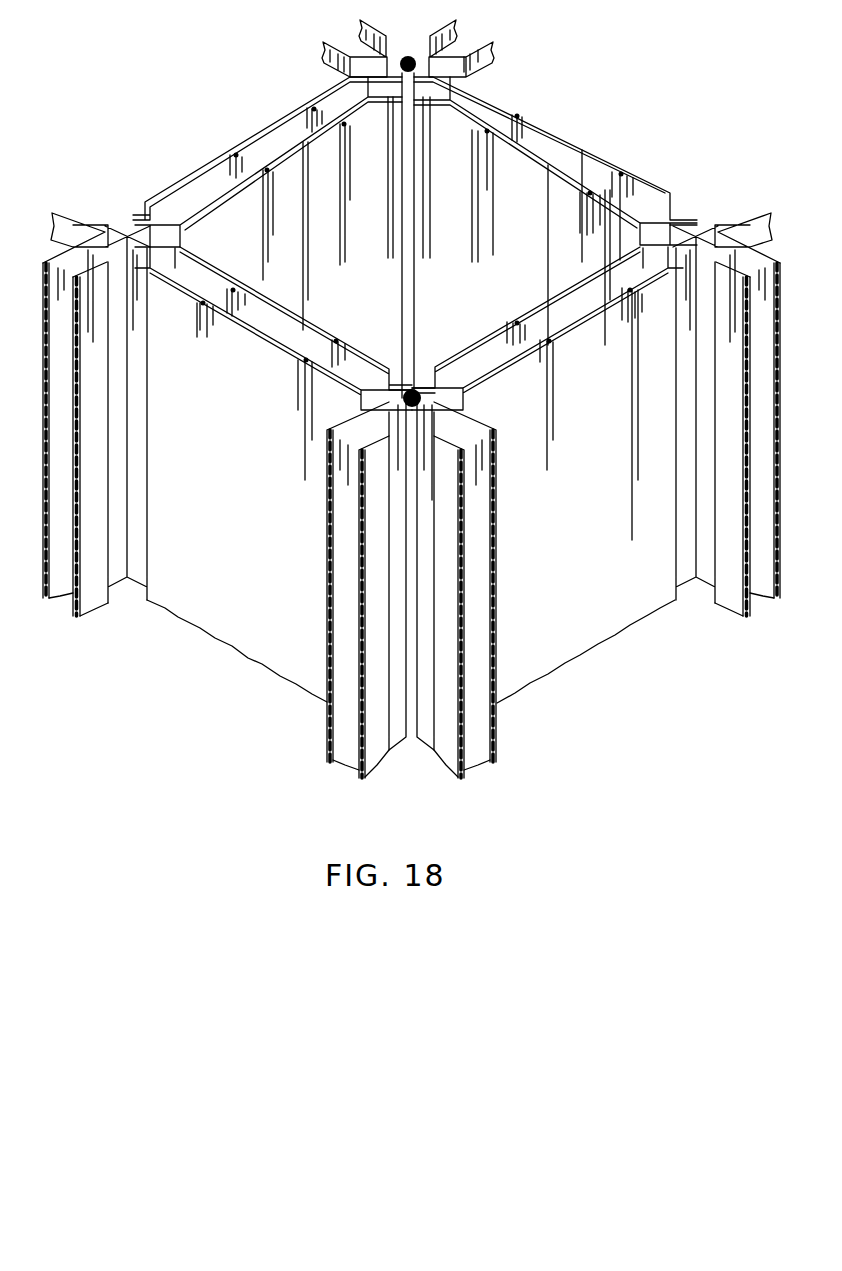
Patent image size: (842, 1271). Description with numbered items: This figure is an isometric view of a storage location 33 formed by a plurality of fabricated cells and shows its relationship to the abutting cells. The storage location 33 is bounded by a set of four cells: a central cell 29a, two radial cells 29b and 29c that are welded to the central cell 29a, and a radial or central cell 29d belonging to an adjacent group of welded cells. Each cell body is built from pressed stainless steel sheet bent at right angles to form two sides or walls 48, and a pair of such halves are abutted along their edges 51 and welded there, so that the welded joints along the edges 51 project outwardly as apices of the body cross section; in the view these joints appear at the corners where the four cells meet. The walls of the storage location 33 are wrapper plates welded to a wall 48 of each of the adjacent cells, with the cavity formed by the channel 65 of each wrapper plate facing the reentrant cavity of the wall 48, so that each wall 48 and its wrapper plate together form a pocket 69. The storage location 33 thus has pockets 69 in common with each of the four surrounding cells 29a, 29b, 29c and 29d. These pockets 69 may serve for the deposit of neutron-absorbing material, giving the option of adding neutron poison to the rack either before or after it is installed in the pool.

The central cell 29a is at (206, 128).
The radial cell 29b is at (272, 390).
The radial cell 29c is at (616, 111).
The radial or central cell 29d is at (547, 334).
The storage location 33 is at (468, 204).
The wall 48 is at (575, 648).
The edge 51 is at (410, 57).
The channel 65 is at (543, 300).
The pocket 69 is at (540, 143).